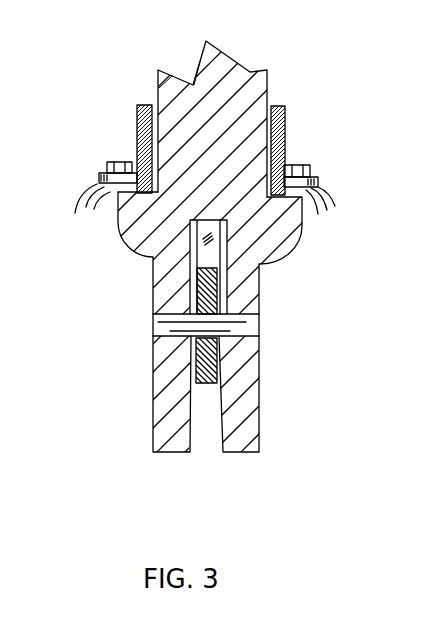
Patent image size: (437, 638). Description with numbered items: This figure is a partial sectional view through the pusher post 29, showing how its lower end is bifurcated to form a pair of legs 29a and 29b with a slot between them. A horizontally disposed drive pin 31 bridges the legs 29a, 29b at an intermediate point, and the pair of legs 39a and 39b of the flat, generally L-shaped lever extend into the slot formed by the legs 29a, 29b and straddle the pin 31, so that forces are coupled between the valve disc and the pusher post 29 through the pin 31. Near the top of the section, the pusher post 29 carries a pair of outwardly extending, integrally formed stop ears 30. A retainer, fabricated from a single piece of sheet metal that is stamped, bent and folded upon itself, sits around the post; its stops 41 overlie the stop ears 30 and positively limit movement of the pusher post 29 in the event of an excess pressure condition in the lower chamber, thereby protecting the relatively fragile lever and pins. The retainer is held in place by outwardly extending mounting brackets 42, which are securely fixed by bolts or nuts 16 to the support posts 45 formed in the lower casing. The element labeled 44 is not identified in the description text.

The nuts 16 is at (307, 165).
The pusher post 29 is at (267, 86).
The leg of pusher post 29a is at (247, 452).
The leg of pusher post 29b is at (168, 452).
The stop ears 30 is at (117, 213).
The drive pin 31 is at (259, 340).
The leg of lever 39a is at (217, 297).
The leg of lever 39b is at (197, 358).
The stops 41 is at (136, 128).
The mounting brackets 42 is at (318, 179).
The bushing sleeve 44 is at (197, 268).
The support posts 45 is at (85, 196).